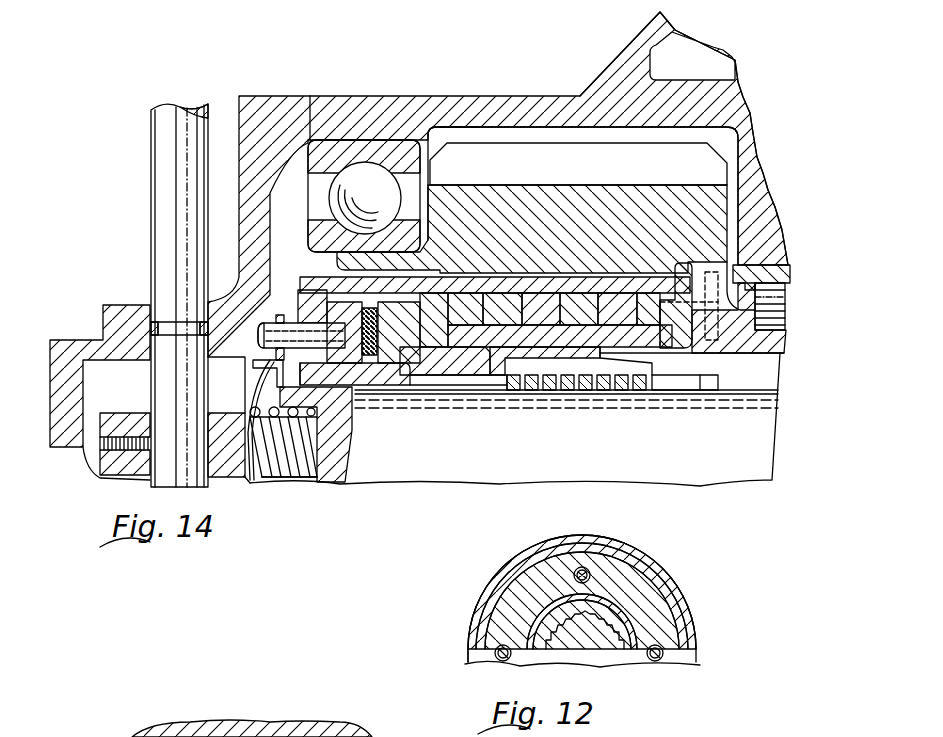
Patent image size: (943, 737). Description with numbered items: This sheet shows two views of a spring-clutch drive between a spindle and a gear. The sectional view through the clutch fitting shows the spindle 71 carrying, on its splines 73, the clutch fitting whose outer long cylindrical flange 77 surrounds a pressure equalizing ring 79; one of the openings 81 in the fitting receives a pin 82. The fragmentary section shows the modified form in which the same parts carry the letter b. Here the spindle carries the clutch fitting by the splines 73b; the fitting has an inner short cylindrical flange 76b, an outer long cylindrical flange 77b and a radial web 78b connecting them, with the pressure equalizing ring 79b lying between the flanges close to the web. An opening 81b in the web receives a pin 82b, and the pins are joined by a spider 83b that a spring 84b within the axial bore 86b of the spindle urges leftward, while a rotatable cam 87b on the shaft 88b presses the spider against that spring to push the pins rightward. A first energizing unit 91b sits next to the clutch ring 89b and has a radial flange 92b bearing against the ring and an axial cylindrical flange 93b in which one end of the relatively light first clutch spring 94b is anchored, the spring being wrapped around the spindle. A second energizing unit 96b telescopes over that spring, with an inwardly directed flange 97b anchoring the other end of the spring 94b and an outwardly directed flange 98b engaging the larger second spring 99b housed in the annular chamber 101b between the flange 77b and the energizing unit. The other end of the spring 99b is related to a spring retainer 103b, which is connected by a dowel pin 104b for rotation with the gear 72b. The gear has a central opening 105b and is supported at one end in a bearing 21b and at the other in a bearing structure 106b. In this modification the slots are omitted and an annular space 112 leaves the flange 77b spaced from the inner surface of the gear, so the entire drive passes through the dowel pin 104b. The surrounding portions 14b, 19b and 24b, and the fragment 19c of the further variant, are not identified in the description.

In FIG. 14, the housing body 14b is at (286, 278).
In FIG. 14, the housing wall 19b is at (550, 102).
In FIG. 14, the bearing 21b is at (326, 150).
In FIG. 14, the cavity wall 24b is at (447, 130).
In FIG. 14, the gear 72b is at (583, 196).
In FIG. 14, the shaft 88b is at (162, 205).
In FIG. 14, the web 78b is at (312, 300).
In FIG. 14, the opening 81b is at (327, 330).
In FIG. 14, the pin 82b is at (258, 336).
In FIG. 14, the clutch ring 89b is at (370, 318).
In FIG. 14, the radial flange 92b is at (410, 310).
In FIG. 14, the outwardly directed flange 98b is at (445, 315).
In FIG. 14, the second spring 99b is at (503, 287).
In FIG. 14, the outer cylindrical flange 77b is at (530, 290).
In FIG. 14, the central opening 105b is at (573, 292).
In FIG. 14, the annular chamber 101b is at (588, 302).
In FIG. 14, the annular space 112 is at (640, 292).
In FIG. 14, the spring retainer 103b is at (683, 278).
In FIG. 14, the dowel pin 104b is at (697, 303).
In FIG. 14, the bearing structure 106b is at (772, 296).
In FIG. 14, the inwardly directed flange 97b is at (705, 380).
In FIG. 14, the second energizing unit 96b is at (554, 347).
In FIG. 14, the first clutch spring 94b is at (612, 386).
In FIG. 14, the axial cylindrical flange 93b is at (488, 366).
In FIG. 14, the first energizing unit 91b is at (462, 366).
In FIG. 14, the inner cylindrical flange 76b is at (405, 386).
In FIG. 14, the splines 73b is at (381, 385).
In FIG. 14, the pressure equalizing ring 79b is at (357, 355).
In FIG. 14, the axial bore 86b is at (270, 417).
In FIG. 14, the spider 83b is at (249, 480).
In FIG. 14, the spring 84b is at (300, 478).
In FIG. 14, the rotatable cam 87b is at (118, 418).
In FIG. 14, the housing fragment 19c is at (222, 726).
In FIG. 12, the outer cylindrical flange 77 is at (692, 641).
In FIG. 12, the splines 73 is at (620, 655).
In FIG. 12, the spindle 71 is at (592, 655).
In FIG. 12, the opening 81 is at (610, 558).
In FIG. 12, the pin 82 is at (590, 576).
In FIG. 12, the pressure equalizing ring 79 is at (660, 660).